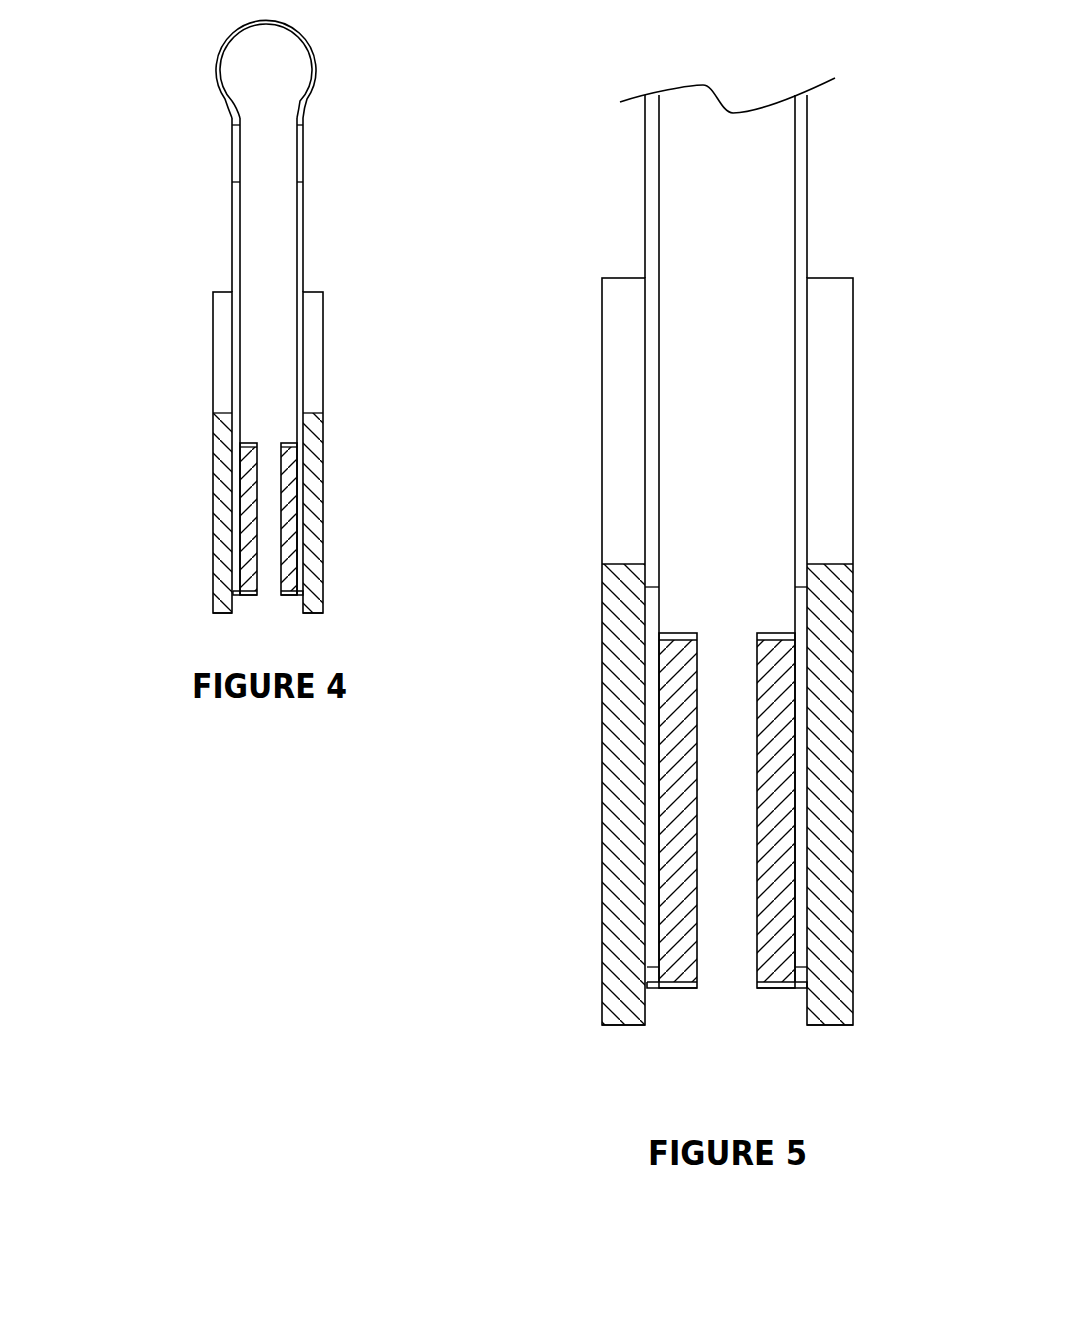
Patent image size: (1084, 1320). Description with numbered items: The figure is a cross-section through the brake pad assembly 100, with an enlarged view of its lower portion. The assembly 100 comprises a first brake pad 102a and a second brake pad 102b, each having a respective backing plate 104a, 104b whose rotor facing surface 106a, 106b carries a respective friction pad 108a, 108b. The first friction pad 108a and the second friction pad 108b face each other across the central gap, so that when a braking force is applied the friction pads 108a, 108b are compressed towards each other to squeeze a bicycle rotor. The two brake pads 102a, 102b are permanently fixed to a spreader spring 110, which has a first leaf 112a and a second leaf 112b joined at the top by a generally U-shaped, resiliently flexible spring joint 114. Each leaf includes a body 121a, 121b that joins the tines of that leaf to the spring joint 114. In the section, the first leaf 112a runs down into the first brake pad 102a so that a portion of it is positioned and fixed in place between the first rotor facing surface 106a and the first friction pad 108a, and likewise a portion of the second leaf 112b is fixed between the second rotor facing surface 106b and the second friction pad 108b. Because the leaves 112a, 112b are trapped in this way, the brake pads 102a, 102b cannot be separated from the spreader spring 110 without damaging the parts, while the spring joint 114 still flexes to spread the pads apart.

In FIG. 4, the brake pad assembly 100 is at (282, 332).
In FIG. 4, the first brake pad 102a is at (392, 466).
In FIG. 4, the second brake pad 102b is at (150, 467).
In FIG. 4, the first backing plate 104a is at (317, 355).
In FIG. 5, the first backing plate 104a is at (818, 425).
In FIG. 4, the second backing plate 104b is at (222, 357).
In FIG. 5, the second backing plate 104b is at (652, 267).
In FIG. 4, the first rotor facing surface 106a is at (297, 606).
In FIG. 5, the first rotor facing surface 106a is at (793, 1012).
In FIG. 4, the second rotor facing surface 106b is at (235, 606).
In FIG. 5, the second rotor facing surface 106b is at (647, 1012).
In FIG. 4, the first friction pad 108a is at (297, 556).
In FIG. 5, the first friction pad 108a is at (773, 823).
In FIG. 4, the second friction pad 108b is at (240, 567).
In FIG. 5, the second friction pad 108b is at (678, 872).
In FIG. 4, the spreader spring 110 is at (318, 101).
In FIG. 4, the first leaf 112a is at (303, 253).
In FIG. 5, the first leaf 112a is at (802, 157).
In FIG. 4, the second leaf 112b is at (233, 172).
In FIG. 5, the second leaf 112b is at (643, 177).
In FIG. 4, the spring joint 114 is at (290, 33).
In FIG. 4, the first body 121a is at (303, 285).
In FIG. 5, the first body 121a is at (802, 262).
In FIG. 4, the second body 121b is at (233, 208).
In FIG. 5, the second body 121b is at (655, 233).